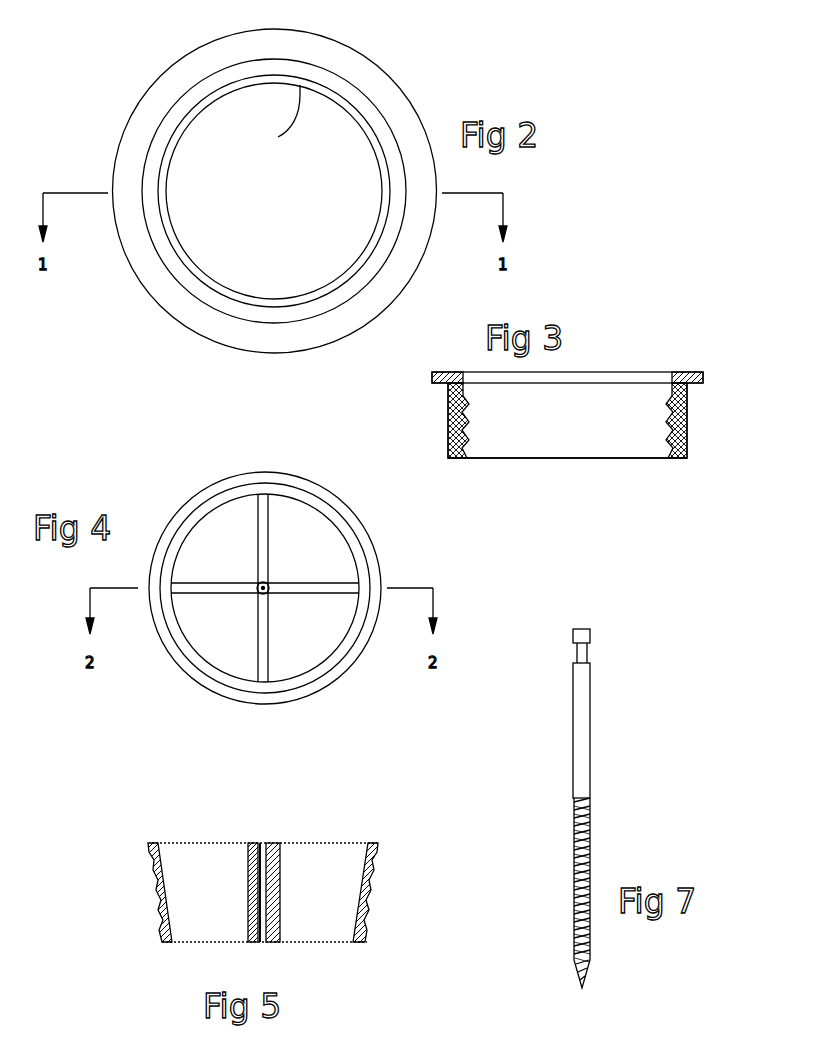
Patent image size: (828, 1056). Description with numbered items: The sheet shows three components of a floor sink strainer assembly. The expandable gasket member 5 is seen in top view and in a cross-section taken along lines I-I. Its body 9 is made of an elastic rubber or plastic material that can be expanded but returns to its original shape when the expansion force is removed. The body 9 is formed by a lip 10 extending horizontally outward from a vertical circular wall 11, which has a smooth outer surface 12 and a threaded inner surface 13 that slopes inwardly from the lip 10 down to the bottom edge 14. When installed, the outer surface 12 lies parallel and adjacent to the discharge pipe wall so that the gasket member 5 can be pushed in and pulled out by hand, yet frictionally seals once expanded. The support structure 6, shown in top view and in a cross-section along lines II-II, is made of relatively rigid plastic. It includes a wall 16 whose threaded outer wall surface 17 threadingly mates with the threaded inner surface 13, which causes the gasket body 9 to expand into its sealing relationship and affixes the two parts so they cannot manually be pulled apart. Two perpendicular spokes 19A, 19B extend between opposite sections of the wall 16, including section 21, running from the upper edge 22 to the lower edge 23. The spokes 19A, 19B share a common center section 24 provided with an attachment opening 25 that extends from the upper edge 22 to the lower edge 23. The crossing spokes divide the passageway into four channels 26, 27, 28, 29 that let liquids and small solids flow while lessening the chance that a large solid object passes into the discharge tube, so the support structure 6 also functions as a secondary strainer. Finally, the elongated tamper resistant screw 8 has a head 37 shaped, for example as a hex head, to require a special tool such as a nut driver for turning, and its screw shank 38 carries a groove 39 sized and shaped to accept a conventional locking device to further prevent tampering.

In FIG. 2, the expandable gasket member 5 is at (393, 48).
In FIG. 2, the lip 10 is at (395, 107).
In FIG. 3, the lip 10 is at (688, 371).
In FIG. 2, the threaded inner surface 13 is at (328, 92).
In FIG. 3, the threaded inner surface 13 is at (463, 427).
In FIG. 3, the vertical circular wall 11 is at (687, 417).
In FIG. 3, the smooth outer surface 12 is at (687, 440).
In FIG. 3, the bottom edge 14 is at (457, 460).
In FIG. 3, the body 9 is at (430, 452).
In FIG. 5, the support structure 6 is at (358, 816).
In FIG. 4, the spoke 19A is at (338, 576).
In FIG. 4, the spoke 19B is at (270, 505).
In FIG. 4, the section of wall 21 is at (362, 590).
In FIG. 4, the upper edge 22 is at (173, 647).
In FIG. 5, the upper edge 22 is at (373, 842).
In FIG. 4, the lower edge 23 is at (241, 498).
In FIG. 5, the lower edge 23 is at (358, 942).
In FIG. 4, the center section 24 is at (260, 577).
In FIG. 4, the attachment opening 25 is at (260, 595).
In FIG. 5, the attachment opening 25 is at (262, 842).
In FIG. 4, the channel 26 is at (225, 642).
In FIG. 4, the channel 27 is at (307, 627).
In FIG. 4, the channel 28 is at (307, 534).
In FIG. 4, the channel 29 is at (213, 534).
In FIG. 5, the wall 16 is at (150, 842).
In FIG. 5, the threaded outer wall surface 17 is at (158, 910).
In FIG. 7, the tamper resistant screw 8 is at (617, 643).
In FIG. 7, the head 37 is at (578, 625).
In FIG. 7, the screw shank 38 is at (590, 743).
In FIG. 7, the groove 39 is at (577, 655).